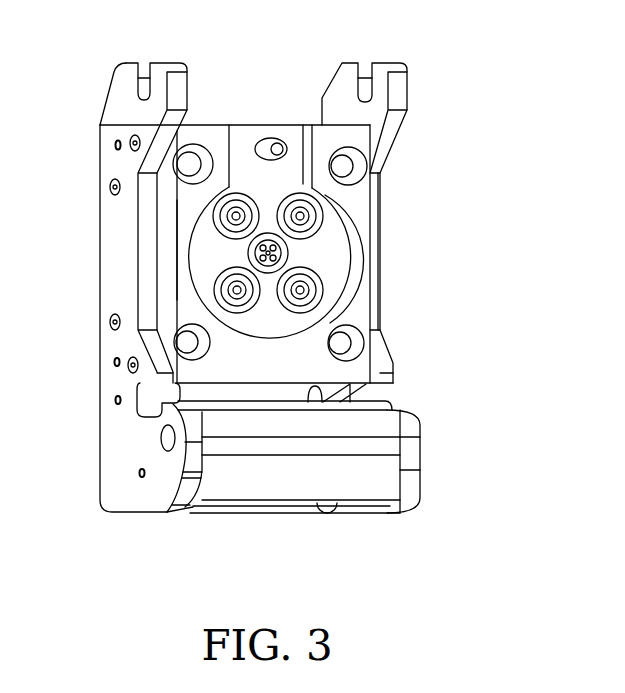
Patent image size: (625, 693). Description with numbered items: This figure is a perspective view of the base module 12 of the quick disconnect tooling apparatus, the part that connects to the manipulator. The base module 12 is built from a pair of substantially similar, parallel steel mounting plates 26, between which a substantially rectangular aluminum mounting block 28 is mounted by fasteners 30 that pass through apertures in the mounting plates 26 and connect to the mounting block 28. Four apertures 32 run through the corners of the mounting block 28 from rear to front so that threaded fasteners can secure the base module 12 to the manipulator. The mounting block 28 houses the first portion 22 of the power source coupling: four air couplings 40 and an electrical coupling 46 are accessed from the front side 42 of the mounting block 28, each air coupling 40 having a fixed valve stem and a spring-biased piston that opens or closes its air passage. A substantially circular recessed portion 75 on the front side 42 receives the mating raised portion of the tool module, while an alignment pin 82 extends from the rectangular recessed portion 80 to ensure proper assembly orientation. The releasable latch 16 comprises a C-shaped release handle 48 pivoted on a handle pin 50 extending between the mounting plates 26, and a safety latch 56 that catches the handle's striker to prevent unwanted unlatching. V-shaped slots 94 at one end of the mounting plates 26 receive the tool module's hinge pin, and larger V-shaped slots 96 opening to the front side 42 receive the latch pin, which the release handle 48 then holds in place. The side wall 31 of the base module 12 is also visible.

The base module 12 is at (393, 305).
The latch 16 is at (222, 512).
The first portion of power source coupling 22 is at (333, 217).
The mounting plates 26 is at (100, 72).
The mounting block 28 is at (299, 113).
The fasteners 30 is at (123, 138).
The side wall 31 is at (165, 250).
The apertures 32 is at (199, 146).
The air couplings 40 is at (326, 265).
The front side 42 is at (362, 267).
The electrical coupling 46 is at (249, 253).
The release handle 48 is at (277, 514).
The handle pin 50 is at (152, 444).
The safety latch 56 is at (330, 525).
The recessed portion 75 is at (293, 339).
The rectangular recessed portion 80 is at (231, 123).
The alignment pin 82 is at (266, 126).
The V-shaped slots 94 is at (143, 72).
The V-shaped slots 96 is at (364, 396).